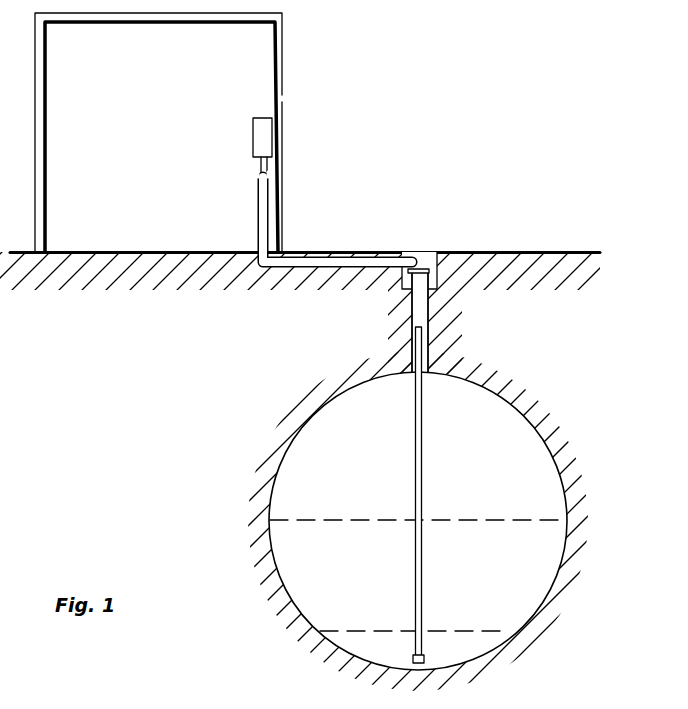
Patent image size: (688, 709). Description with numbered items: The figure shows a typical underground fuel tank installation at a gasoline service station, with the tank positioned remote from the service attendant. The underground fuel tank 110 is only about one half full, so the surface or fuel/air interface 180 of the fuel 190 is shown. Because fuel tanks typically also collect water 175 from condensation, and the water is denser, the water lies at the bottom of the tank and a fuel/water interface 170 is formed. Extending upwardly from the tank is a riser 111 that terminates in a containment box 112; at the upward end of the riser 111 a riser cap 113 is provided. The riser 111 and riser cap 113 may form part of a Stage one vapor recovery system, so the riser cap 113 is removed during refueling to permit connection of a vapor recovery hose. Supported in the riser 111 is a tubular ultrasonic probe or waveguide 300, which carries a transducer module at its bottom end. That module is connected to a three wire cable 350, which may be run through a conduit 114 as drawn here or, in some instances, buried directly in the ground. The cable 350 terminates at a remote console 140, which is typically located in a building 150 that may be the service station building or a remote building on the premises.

The underground fuel tank 110 is at (548, 420).
The riser 111 is at (428, 335).
The containment box 112 is at (440, 262).
The riser cap 113 is at (424, 268).
The conduit 114 is at (258, 233).
The remote console 140 is at (253, 128).
The building 150 is at (283, 50).
The fuel/water interface 170 is at (357, 632).
The water 175 is at (458, 658).
The fuel/air interface 180 is at (340, 520).
The fuel 190 is at (547, 557).
The ultrasonic probe or waveguide 300 is at (424, 492).
The cable 350 is at (261, 168).